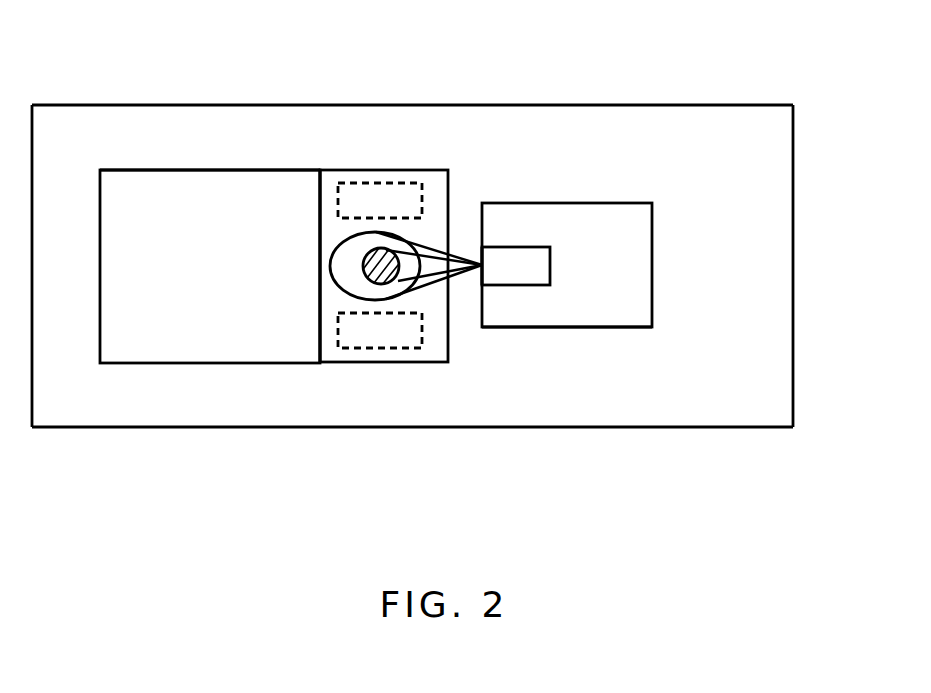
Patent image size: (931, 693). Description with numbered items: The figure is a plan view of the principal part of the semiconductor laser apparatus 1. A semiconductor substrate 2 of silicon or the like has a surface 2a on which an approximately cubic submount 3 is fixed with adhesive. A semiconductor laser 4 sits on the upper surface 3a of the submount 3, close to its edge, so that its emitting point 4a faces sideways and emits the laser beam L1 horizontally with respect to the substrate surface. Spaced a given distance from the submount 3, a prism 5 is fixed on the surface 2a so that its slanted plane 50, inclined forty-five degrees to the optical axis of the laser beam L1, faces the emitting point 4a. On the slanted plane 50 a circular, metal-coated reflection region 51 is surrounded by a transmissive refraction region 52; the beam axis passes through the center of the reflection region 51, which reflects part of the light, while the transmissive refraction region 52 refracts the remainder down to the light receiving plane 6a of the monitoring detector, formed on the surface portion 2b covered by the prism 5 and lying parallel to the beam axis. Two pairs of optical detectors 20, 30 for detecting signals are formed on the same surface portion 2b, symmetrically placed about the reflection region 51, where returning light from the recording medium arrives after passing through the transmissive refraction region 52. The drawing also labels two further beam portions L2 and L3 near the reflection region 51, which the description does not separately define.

The semiconductor laser apparatus 1 is at (750, 65).
The semiconductor substrate 2 is at (772, 242).
The surface of semiconductor substrate 2a is at (723, 416).
The surface portion of semiconductor substrate 2b is at (148, 195).
The submount 3 is at (645, 225).
The upper surface of submount 3a is at (628, 315).
The semiconductor laser 4 is at (538, 262).
The emitting point 4a is at (486, 262).
The prism 5 is at (160, 327).
The light receiving plane of optical detector for monitoring 6a is at (257, 200).
The optical detector for detecting signals 20 is at (377, 348).
The optical detector for detecting signals 30 is at (378, 183).
The slanted plane 50 is at (437, 348).
The reflection region 51 is at (380, 284).
The transmissive refraction region 52 is at (318, 328).
The laser beam L1 is at (518, 378).
The upper light beam component L2 is at (392, 283).
The lower light beam component L3 is at (400, 279).